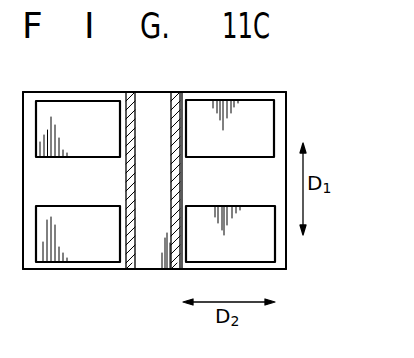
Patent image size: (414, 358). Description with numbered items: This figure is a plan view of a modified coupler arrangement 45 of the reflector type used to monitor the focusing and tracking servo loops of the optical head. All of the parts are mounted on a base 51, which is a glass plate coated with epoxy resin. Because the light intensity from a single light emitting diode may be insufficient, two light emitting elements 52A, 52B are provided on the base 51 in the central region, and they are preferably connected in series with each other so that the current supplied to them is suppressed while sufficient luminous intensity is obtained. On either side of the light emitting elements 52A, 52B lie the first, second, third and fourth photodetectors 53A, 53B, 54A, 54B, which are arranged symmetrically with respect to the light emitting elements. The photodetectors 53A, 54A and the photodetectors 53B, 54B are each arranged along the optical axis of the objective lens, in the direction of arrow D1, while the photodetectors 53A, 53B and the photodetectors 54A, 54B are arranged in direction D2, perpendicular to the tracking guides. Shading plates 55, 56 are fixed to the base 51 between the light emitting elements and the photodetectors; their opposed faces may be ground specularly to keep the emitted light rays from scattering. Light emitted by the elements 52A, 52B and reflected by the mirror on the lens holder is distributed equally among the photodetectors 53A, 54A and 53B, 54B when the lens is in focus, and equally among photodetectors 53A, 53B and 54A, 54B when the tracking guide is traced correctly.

The coupler arrangement 45 is at (291, 84).
The base 51 is at (283, 199).
The light emitting element 52A is at (157, 156).
The light emitting element 52B is at (150, 202).
The first photodetector 53A is at (78, 111).
The second photodetector 53B is at (78, 252).
The third photodetector 54A is at (228, 101).
The fourth photodetector 54B is at (253, 252).
The shading plate 55 is at (173, 92).
The shading plate 56 is at (128, 92).